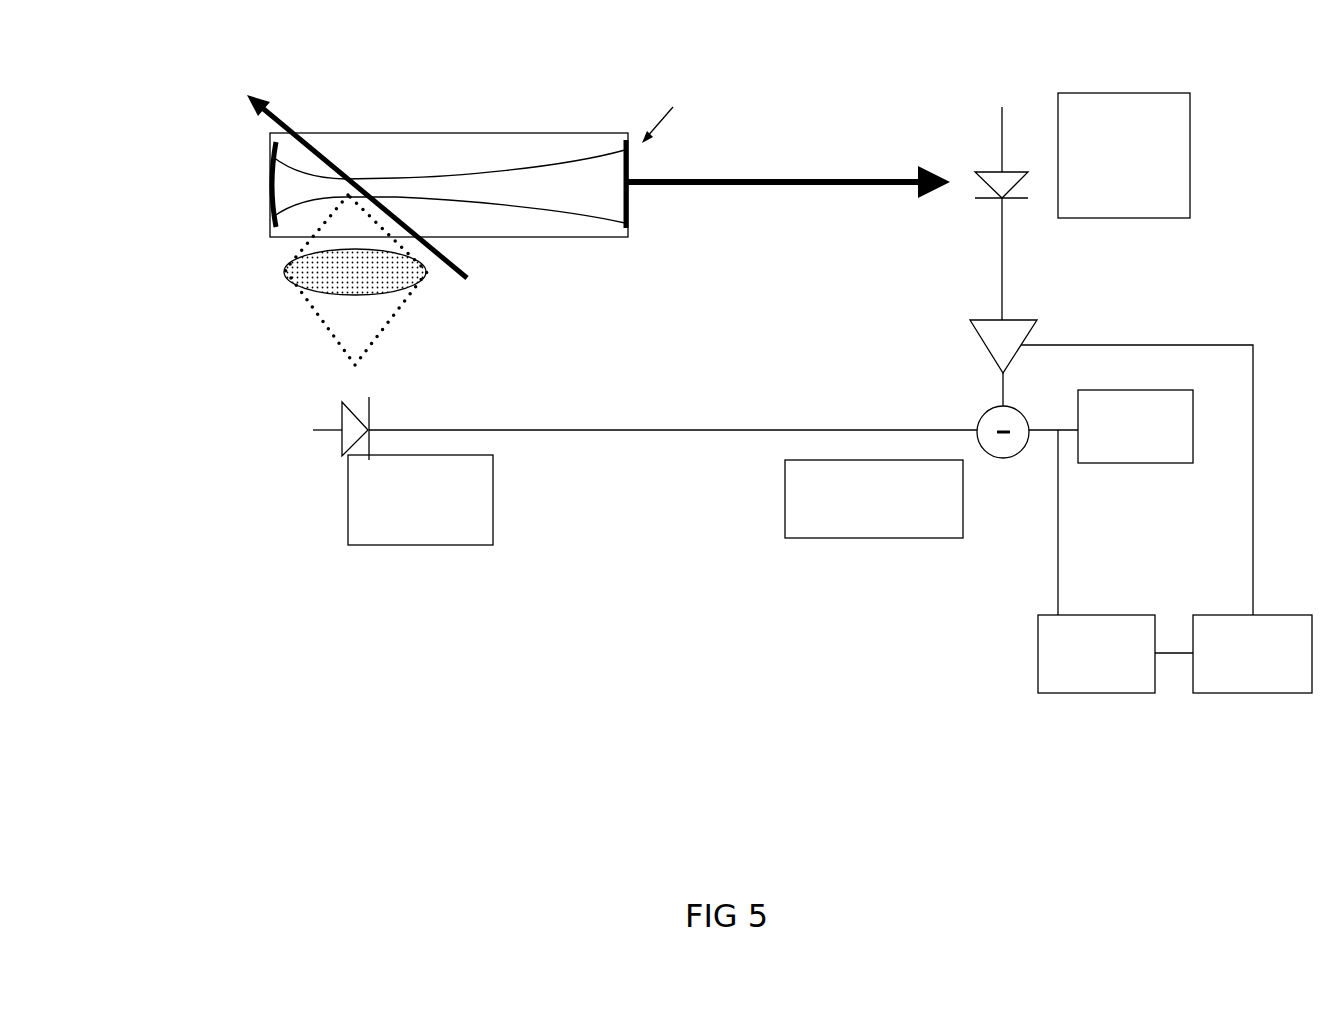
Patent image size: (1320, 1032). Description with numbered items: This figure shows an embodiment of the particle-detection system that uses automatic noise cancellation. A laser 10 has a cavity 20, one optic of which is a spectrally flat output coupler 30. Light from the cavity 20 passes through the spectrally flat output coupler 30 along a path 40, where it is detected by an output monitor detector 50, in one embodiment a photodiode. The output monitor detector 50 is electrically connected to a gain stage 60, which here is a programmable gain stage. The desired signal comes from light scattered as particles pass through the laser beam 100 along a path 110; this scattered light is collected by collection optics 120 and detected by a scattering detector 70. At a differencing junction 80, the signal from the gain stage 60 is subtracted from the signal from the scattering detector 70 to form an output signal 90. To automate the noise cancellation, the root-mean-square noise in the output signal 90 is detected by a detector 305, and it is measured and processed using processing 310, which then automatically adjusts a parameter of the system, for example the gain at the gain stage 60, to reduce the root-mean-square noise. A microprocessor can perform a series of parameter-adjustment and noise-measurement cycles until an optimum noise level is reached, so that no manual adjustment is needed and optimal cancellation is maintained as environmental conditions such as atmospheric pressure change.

The laser 10 is at (454, 68).
The cavity 20 is at (550, 150).
The spectrally flat output coupler 30 is at (630, 205).
The path 40 is at (785, 188).
The output monitor detector 50 is at (1117, 228).
The gain stage 60 is at (995, 365).
The scattering detector 70 is at (493, 497).
The differencing junction 80 is at (882, 538).
The output signal 90 is at (1175, 442).
The laser beam 100 is at (552, 208).
The path 110 is at (453, 278).
The collection optics 120 is at (183, 302).
The detector 305 is at (1078, 693).
The processing 310 is at (1252, 693).